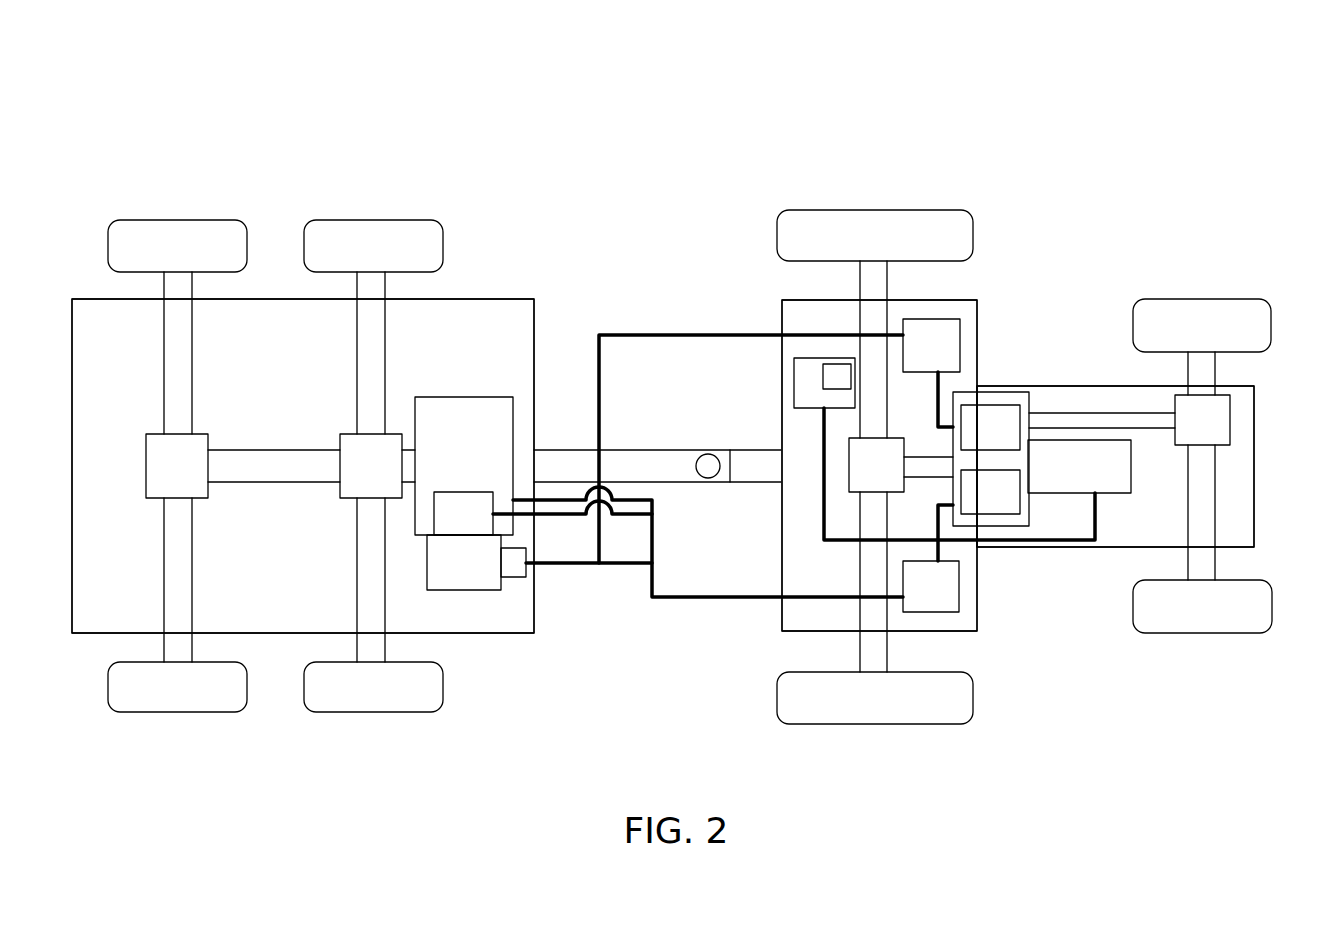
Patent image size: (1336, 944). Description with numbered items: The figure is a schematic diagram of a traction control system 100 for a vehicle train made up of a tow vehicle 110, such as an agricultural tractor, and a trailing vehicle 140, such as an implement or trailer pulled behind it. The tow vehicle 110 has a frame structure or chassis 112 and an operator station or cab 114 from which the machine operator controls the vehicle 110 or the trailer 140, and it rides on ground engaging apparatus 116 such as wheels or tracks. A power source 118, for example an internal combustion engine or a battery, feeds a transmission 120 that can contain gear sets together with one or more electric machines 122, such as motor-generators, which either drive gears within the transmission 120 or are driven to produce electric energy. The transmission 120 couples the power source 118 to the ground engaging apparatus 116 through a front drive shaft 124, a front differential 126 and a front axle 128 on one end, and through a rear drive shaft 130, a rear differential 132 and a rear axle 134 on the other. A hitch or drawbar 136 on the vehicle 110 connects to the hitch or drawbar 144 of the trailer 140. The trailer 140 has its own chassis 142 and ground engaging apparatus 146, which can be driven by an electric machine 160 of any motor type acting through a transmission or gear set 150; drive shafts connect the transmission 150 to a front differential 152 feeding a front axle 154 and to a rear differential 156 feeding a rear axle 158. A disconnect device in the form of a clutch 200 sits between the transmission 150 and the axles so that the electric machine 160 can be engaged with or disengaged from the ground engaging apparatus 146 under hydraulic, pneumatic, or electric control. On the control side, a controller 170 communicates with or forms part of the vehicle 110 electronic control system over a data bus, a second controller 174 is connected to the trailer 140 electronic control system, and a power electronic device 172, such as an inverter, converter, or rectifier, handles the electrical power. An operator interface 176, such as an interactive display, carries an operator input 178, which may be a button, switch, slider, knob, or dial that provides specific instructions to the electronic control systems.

The traction control system 100 is at (613, 120).
The tow vehicle 110 is at (1067, 172).
The chassis 112 is at (1228, 527).
The cab 114 is at (952, 622).
The ground engaging apparatus 116 is at (865, 695).
The power source 118 is at (1059, 480).
The transmission 120 is at (1010, 399).
The electric machine 122 is at (969, 444).
The front drive shaft 124 is at (1081, 420).
The front differential 126 is at (1181, 436).
The front axle 128 is at (1205, 494).
The rear drive shaft 130 is at (925, 467).
The rear differential 132 is at (855, 482).
The rear axle 134 is at (876, 571).
The hitch 136 is at (752, 465).
The trailing vehicle 140 is at (297, 172).
The chassis 142 is at (272, 583).
The hitch 144 is at (633, 463).
The ground engaging apparatus 146 is at (175, 685).
The transmission 150 is at (443, 456).
The front differential 152 is at (350, 478).
The front axle 154 is at (360, 405).
The rear differential 156 is at (156, 478).
The rear axle 158 is at (182, 342).
The electric machine 160 is at (443, 578).
The controller 170 is at (910, 602).
The power electronic device 172 is at (910, 360).
The second controller 174 is at (512, 567).
The operator interface 176 is at (817, 398).
The operator input 178 is at (840, 377).
The clutch 200 is at (442, 530).